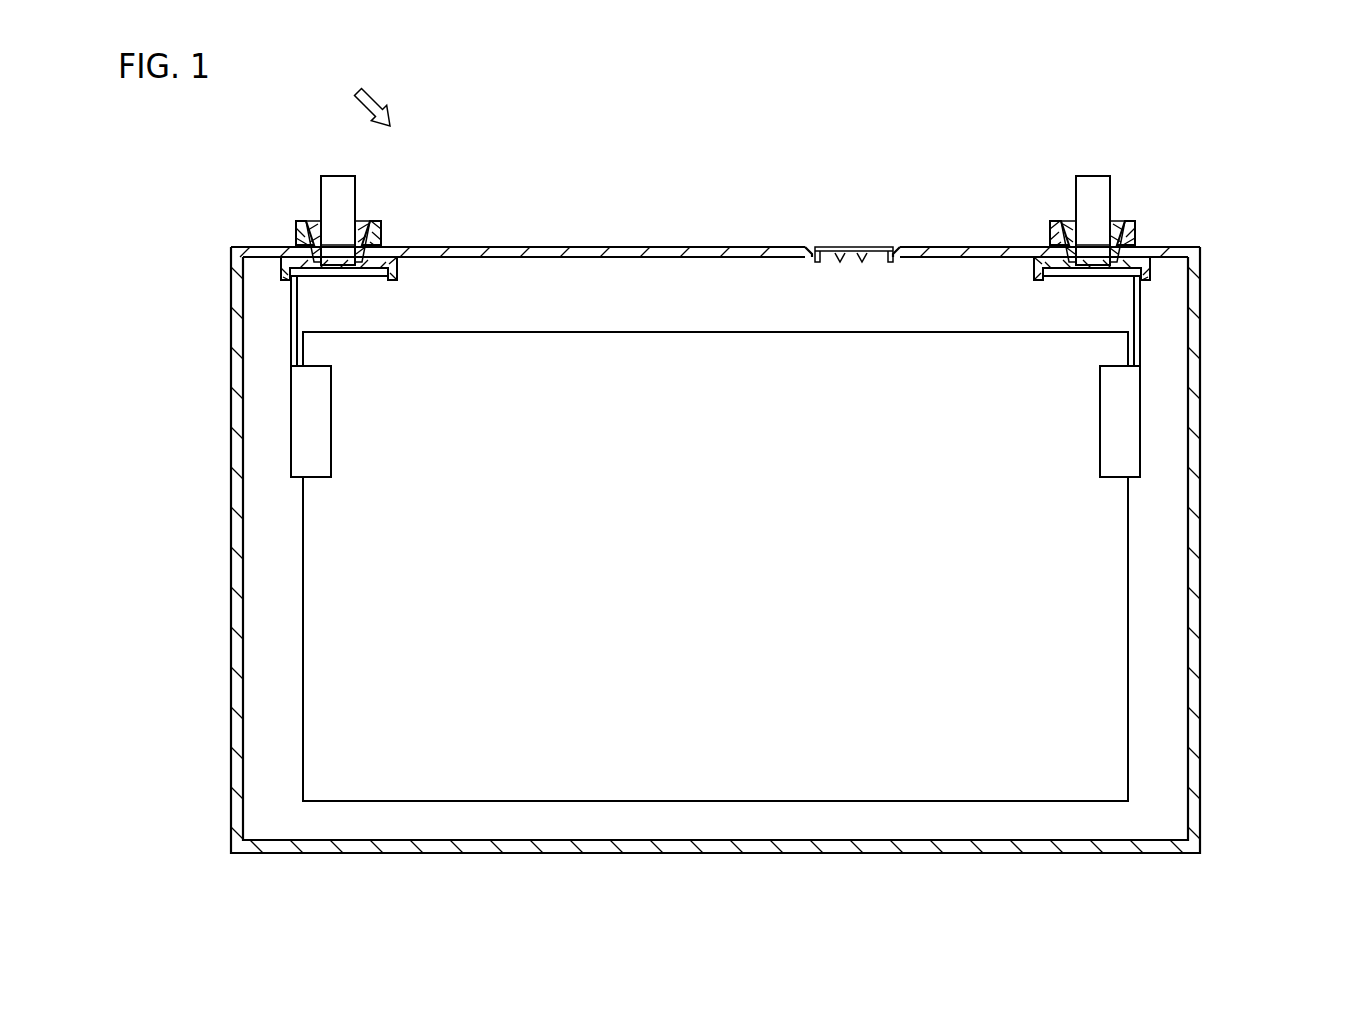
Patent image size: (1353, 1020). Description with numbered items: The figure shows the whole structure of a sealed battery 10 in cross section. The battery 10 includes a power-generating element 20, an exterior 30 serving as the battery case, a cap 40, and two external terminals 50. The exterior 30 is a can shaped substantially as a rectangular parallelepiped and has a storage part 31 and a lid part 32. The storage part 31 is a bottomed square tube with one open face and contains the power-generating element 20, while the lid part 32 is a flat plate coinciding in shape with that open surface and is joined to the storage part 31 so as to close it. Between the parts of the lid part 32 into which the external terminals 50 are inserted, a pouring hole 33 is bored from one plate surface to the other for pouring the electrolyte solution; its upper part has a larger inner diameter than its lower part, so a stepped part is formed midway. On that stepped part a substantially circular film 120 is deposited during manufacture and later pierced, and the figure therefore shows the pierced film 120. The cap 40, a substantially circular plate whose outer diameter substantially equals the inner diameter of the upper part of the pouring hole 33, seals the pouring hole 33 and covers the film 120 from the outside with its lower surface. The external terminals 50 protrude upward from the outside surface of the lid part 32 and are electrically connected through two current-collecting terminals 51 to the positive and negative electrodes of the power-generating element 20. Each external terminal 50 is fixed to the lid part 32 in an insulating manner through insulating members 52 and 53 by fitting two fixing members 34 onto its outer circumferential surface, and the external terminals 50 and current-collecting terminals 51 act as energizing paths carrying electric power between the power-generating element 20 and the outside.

The battery 10 is at (361, 88).
The power-generating element 20 is at (1090, 511).
The exterior 30 is at (787, 516).
The storage part 31 is at (1197, 272).
The lid part 32 is at (1177, 250).
The pouring hole 33 is at (839, 263).
The fixing member 34 is at (296, 234).
The cap 40 is at (855, 247).
The external terminal 50 is at (338, 176).
The current-collecting terminal 51 is at (292, 320).
The insulating member 52 is at (318, 222).
The insulating member 53 is at (283, 270).
The film 120 is at (862, 263).